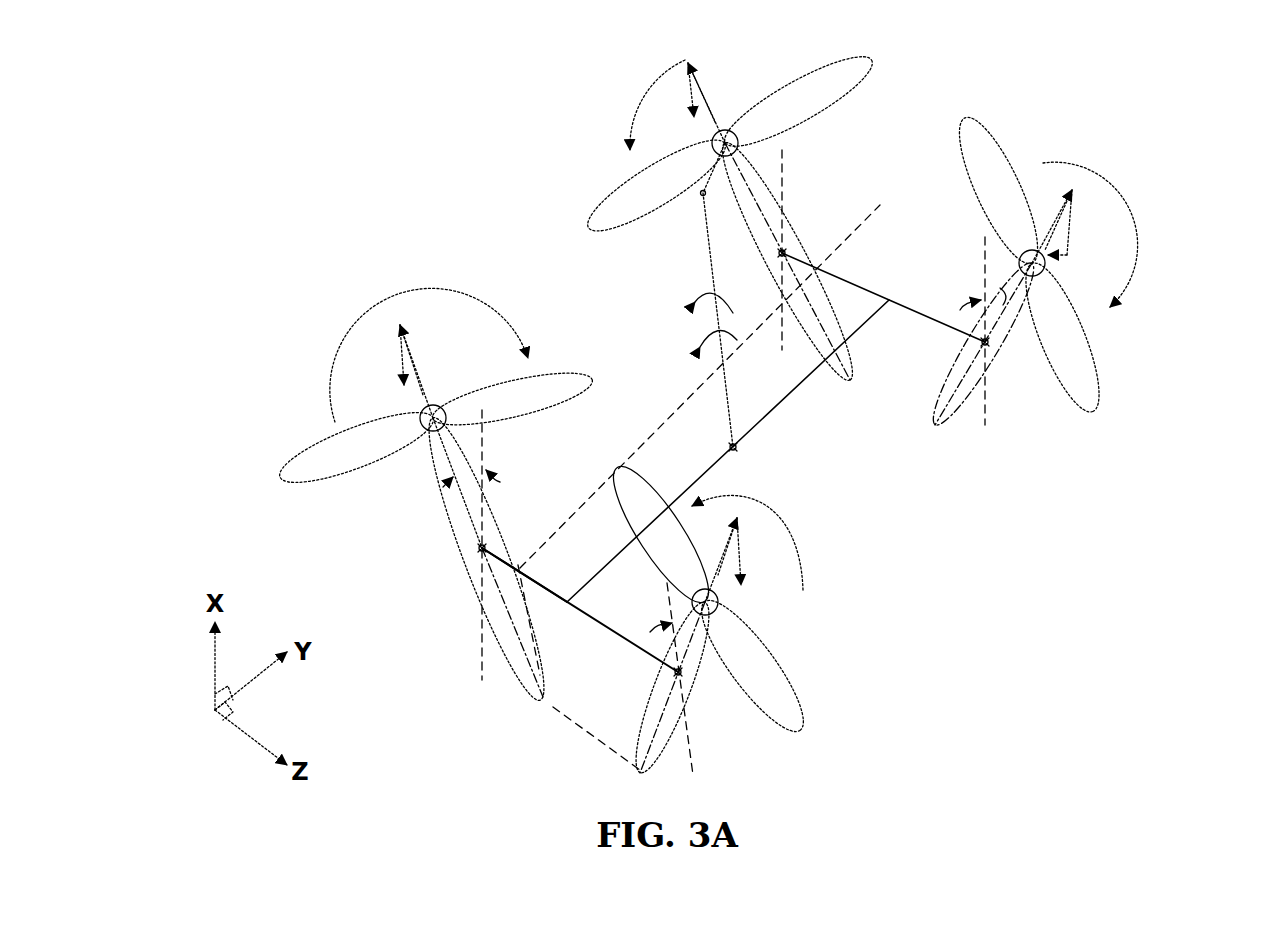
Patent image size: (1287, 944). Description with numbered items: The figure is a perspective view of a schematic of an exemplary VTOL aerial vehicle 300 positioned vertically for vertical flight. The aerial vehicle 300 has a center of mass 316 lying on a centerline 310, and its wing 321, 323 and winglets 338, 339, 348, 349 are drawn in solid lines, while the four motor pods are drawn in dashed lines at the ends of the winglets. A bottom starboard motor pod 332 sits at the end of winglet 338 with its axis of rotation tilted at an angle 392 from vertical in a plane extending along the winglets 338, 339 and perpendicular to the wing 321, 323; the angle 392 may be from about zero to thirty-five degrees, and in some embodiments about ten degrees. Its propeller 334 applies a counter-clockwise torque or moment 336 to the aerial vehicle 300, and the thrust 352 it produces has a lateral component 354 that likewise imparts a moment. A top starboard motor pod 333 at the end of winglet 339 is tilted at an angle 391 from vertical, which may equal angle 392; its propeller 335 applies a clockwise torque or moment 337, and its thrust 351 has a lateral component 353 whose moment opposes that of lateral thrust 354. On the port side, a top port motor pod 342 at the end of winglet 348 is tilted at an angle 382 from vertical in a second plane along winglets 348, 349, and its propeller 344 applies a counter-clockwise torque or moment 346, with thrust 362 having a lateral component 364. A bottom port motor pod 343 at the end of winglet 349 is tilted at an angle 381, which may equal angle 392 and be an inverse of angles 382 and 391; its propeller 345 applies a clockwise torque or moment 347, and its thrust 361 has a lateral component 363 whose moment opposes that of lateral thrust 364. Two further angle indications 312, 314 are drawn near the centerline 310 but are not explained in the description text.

The VTOL aerial vehicle 300 is at (1196, 108).
The centerline 310 is at (740, 450).
The first tilt angle 312 is at (700, 344).
The second tilt angle 314 is at (703, 298).
The center of mass 316 is at (700, 195).
The wing 321 is at (781, 407).
The wing 323 is at (681, 495).
The bottom starboard motor pod 332 is at (838, 382).
The top starboard motor pod 333 is at (942, 424).
The propeller 334 is at (833, 77).
The propeller 335 is at (977, 145).
The torque or moment 336 is at (640, 104).
The torque or moment 337 is at (1122, 274).
The winglet 338 is at (865, 288).
The winglet 339 is at (930, 316).
The top port motor pod 342 is at (665, 745).
The bottom port motor pod 343 is at (455, 534).
The propeller 344 is at (790, 712).
The propeller 345 is at (302, 466).
The torque or moment 346 is at (805, 568).
The torque or moment 347 is at (367, 333).
The winglet 348 is at (608, 628).
The winglet 349 is at (558, 596).
The thrust 351 is at (1056, 222).
The thrust 352 is at (702, 88).
The lateral component 353 is at (1048, 252).
The lateral component 354 is at (712, 122).
The thrust 361 is at (415, 356).
The thrust 362 is at (722, 553).
The lateral component 363 is at (418, 392).
The lateral component 364 is at (720, 585).
The angle 381 is at (514, 490).
The angle 382 is at (700, 634).
The angle 391 is at (1016, 318).
The angle 392 is at (789, 181).